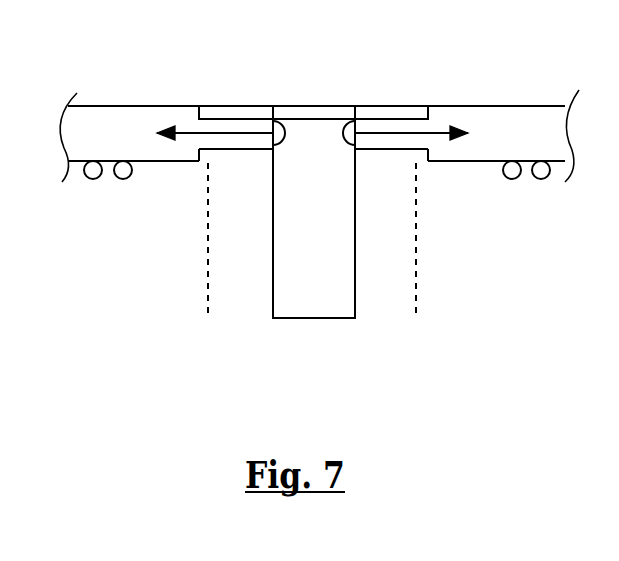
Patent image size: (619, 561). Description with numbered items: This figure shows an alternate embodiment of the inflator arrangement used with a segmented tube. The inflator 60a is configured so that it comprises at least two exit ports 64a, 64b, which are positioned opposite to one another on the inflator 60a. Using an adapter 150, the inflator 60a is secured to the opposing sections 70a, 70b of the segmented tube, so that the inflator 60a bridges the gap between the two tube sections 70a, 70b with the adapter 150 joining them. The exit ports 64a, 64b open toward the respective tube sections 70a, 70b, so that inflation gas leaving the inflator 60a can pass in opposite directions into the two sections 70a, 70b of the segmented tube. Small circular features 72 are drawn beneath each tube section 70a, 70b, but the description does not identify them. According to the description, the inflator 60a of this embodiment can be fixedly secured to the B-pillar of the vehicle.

The section of segmented tube 70a is at (99, 115).
The section of segmented tube 70b is at (545, 137).
The exit port 64a is at (278, 132).
The exit port 64b is at (345, 130).
The rollers 72 is at (85, 185).
The adapter 150 is at (210, 158).
The inflator 60a is at (313, 303).